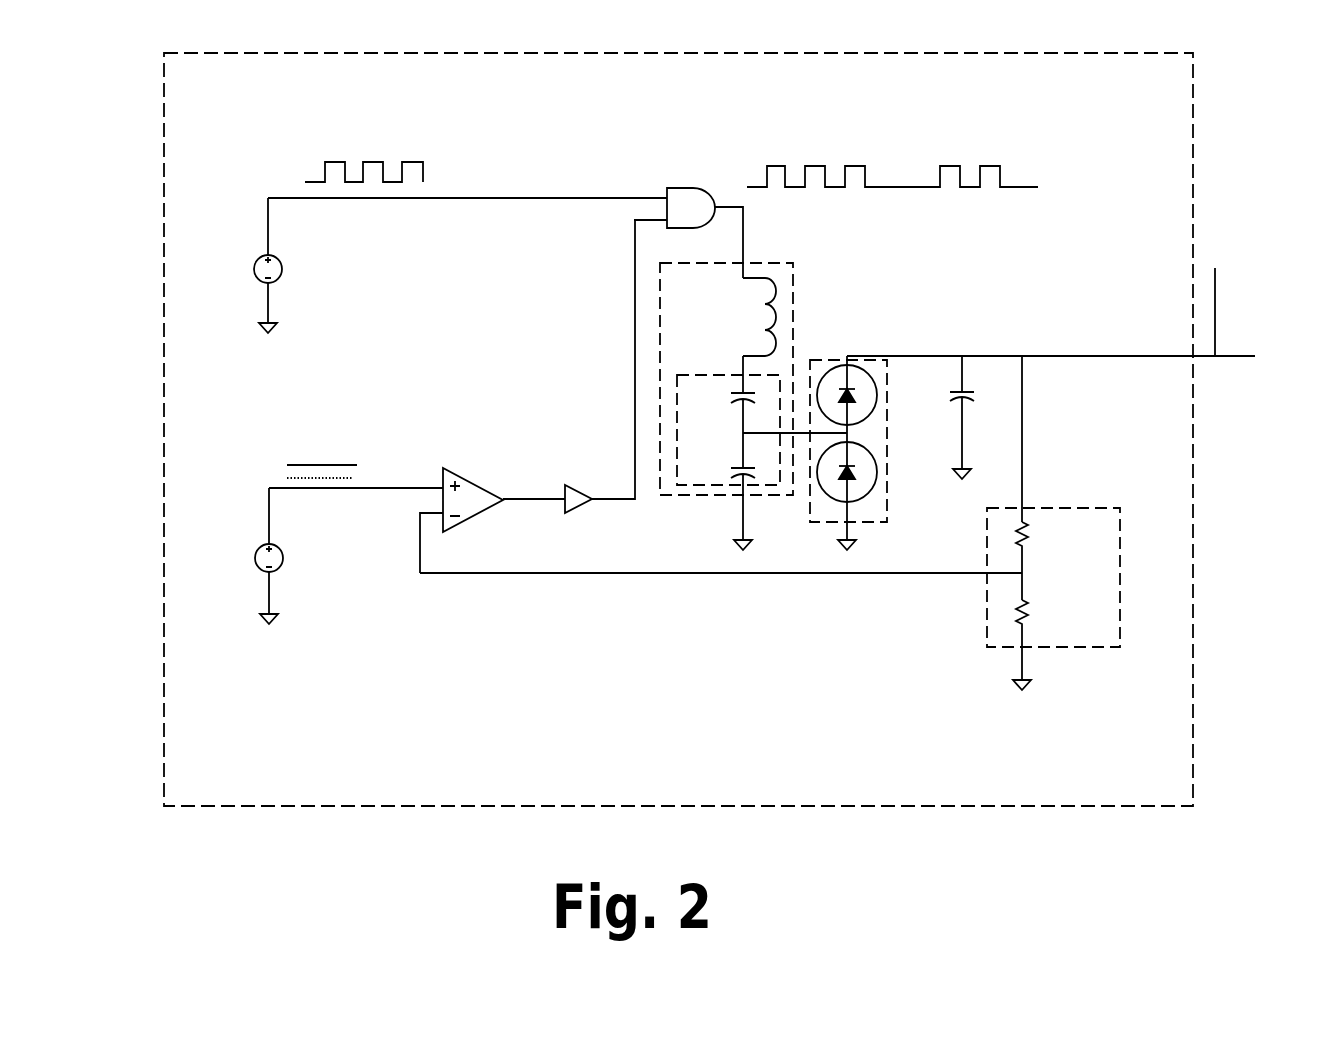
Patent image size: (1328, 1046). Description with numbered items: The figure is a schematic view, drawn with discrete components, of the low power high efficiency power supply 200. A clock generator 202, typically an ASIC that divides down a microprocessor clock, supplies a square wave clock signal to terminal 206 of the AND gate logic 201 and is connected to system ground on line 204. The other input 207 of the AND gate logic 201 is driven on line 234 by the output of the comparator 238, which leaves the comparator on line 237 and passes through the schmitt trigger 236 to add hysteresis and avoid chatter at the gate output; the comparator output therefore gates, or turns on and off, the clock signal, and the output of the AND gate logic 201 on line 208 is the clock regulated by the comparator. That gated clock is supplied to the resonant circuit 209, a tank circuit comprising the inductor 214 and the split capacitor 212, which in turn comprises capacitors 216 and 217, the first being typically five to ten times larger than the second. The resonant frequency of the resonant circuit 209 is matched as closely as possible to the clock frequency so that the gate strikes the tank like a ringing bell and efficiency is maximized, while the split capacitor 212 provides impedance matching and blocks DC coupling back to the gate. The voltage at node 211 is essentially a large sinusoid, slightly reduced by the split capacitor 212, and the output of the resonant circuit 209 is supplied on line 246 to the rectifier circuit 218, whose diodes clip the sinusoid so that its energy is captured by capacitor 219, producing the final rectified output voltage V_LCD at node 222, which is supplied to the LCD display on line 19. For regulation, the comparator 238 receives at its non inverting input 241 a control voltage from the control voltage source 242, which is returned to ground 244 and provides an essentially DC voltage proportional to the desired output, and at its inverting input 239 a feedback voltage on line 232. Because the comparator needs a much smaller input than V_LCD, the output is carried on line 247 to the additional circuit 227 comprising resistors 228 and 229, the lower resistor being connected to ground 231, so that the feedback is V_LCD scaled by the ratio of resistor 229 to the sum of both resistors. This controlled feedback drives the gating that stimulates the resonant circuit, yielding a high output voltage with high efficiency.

The line 19 is at (1215, 303).
The low power high efficiency power supply 200 is at (275, 777).
The AND gate logic 201 is at (690, 187).
The clock generator 202 is at (254, 270).
The line 204 is at (270, 309).
The terminal 206 is at (653, 194).
The input 207 is at (655, 222).
The line 208 is at (729, 206).
The resonant circuit 209 is at (724, 289).
The node 211 is at (740, 368).
The split capacitor 212 is at (720, 399).
The inductor 214 is at (768, 290).
The capacitor 216 is at (742, 402).
The capacitor 217 is at (748, 470).
The rectifier circuit 218 is at (887, 442).
The capacitor 219 is at (965, 395).
The node 222 is at (1233, 356).
The additional circuit 227 is at (1113, 541).
The resistor 228 is at (1030, 540).
The resistor 229 is at (1030, 614).
The ground 231 is at (1025, 672).
The line 232 is at (897, 575).
The line 234 is at (617, 500).
The schmitt trigger 236 is at (578, 485).
The comparator output line 237 is at (520, 500).
The comparator 238 is at (478, 470).
The inverting input 239 is at (430, 515).
The non inverting input 241 is at (423, 487).
The control voltage source 242 is at (255, 559).
The ground 244 is at (270, 600).
The line 246 is at (768, 434).
The divider input line 247 is at (1022, 425).